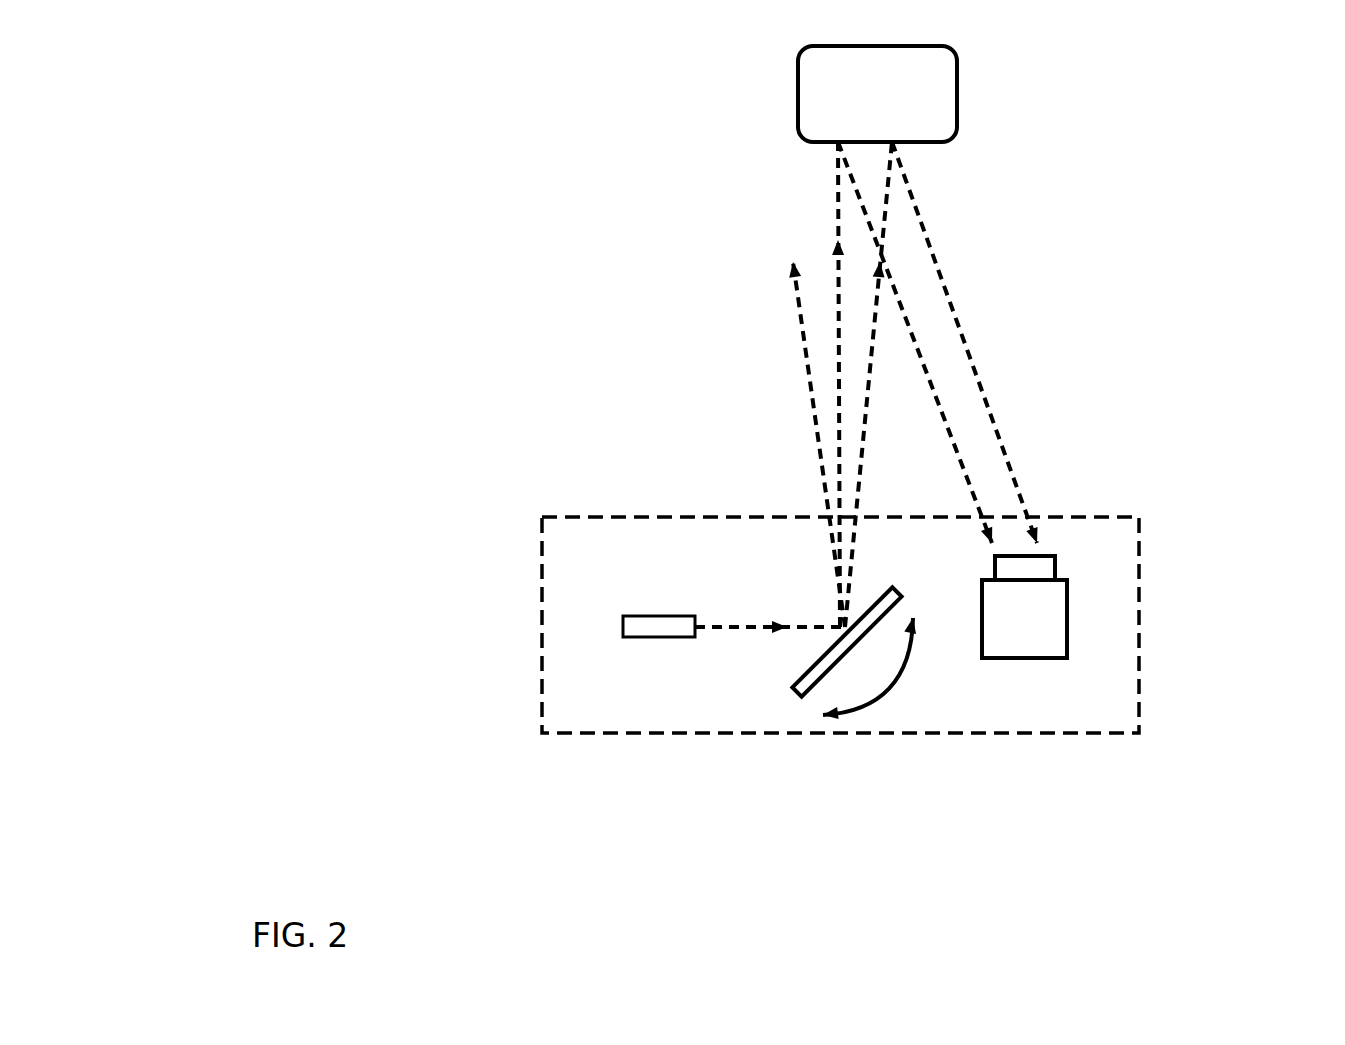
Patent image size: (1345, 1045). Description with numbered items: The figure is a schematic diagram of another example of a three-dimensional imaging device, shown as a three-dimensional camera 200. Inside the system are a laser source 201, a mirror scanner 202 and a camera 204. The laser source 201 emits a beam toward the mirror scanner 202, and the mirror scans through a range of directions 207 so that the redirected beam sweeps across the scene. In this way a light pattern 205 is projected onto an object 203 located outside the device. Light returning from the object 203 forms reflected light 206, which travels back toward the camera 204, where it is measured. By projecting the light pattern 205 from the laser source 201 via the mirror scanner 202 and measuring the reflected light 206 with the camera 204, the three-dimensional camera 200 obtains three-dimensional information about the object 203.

The 3D camera 200 is at (1139, 580).
The laser source 201 is at (622, 626).
The mirror scanner 202 is at (790, 688).
The object 203 is at (960, 91).
The camera 204 is at (1067, 640).
The light pattern 205 is at (798, 313).
The reflected light 206 is at (950, 295).
The range of directions 207 is at (863, 703).